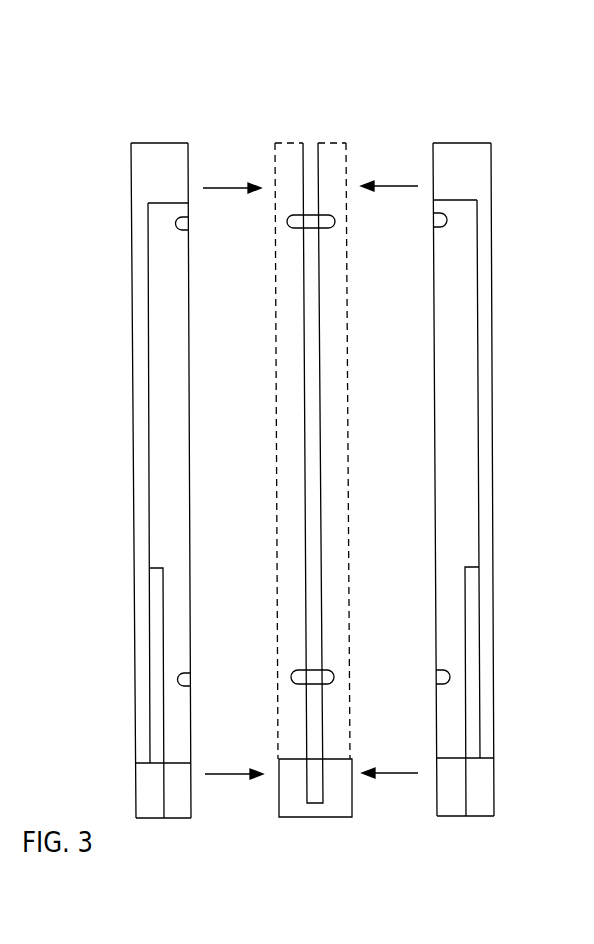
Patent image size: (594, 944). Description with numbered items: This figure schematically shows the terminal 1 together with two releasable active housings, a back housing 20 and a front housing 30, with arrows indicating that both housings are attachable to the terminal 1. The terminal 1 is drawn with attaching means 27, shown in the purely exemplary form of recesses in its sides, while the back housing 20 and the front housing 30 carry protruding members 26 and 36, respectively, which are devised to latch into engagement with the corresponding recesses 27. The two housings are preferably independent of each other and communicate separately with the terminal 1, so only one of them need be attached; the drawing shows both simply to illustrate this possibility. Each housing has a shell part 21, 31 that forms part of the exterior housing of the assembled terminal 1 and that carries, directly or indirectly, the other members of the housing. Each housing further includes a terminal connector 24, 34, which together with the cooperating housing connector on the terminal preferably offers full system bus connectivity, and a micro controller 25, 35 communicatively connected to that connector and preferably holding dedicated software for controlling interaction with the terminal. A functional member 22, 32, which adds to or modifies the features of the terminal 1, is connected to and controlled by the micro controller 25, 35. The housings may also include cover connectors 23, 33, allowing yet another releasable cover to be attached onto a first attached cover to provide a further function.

The terminal 1 is at (308, 118).
The back housing 20 is at (147, 130).
The shell part 21 is at (131, 170).
The functional member 22 is at (131, 390).
The cover connector 23 is at (135, 773).
The terminal connector 24 is at (181, 818).
The micro controller 25 is at (148, 683).
The protruding member 26 is at (203, 228).
The attaching means 27 is at (289, 227).
The front housing 30 is at (460, 128).
The shell part 31 is at (491, 167).
The functional member 32 is at (494, 388).
The cover connector 33 is at (494, 770).
The terminal connector 34 is at (452, 816).
The micro controller 35 is at (480, 666).
The protruding member 36 is at (422, 230).